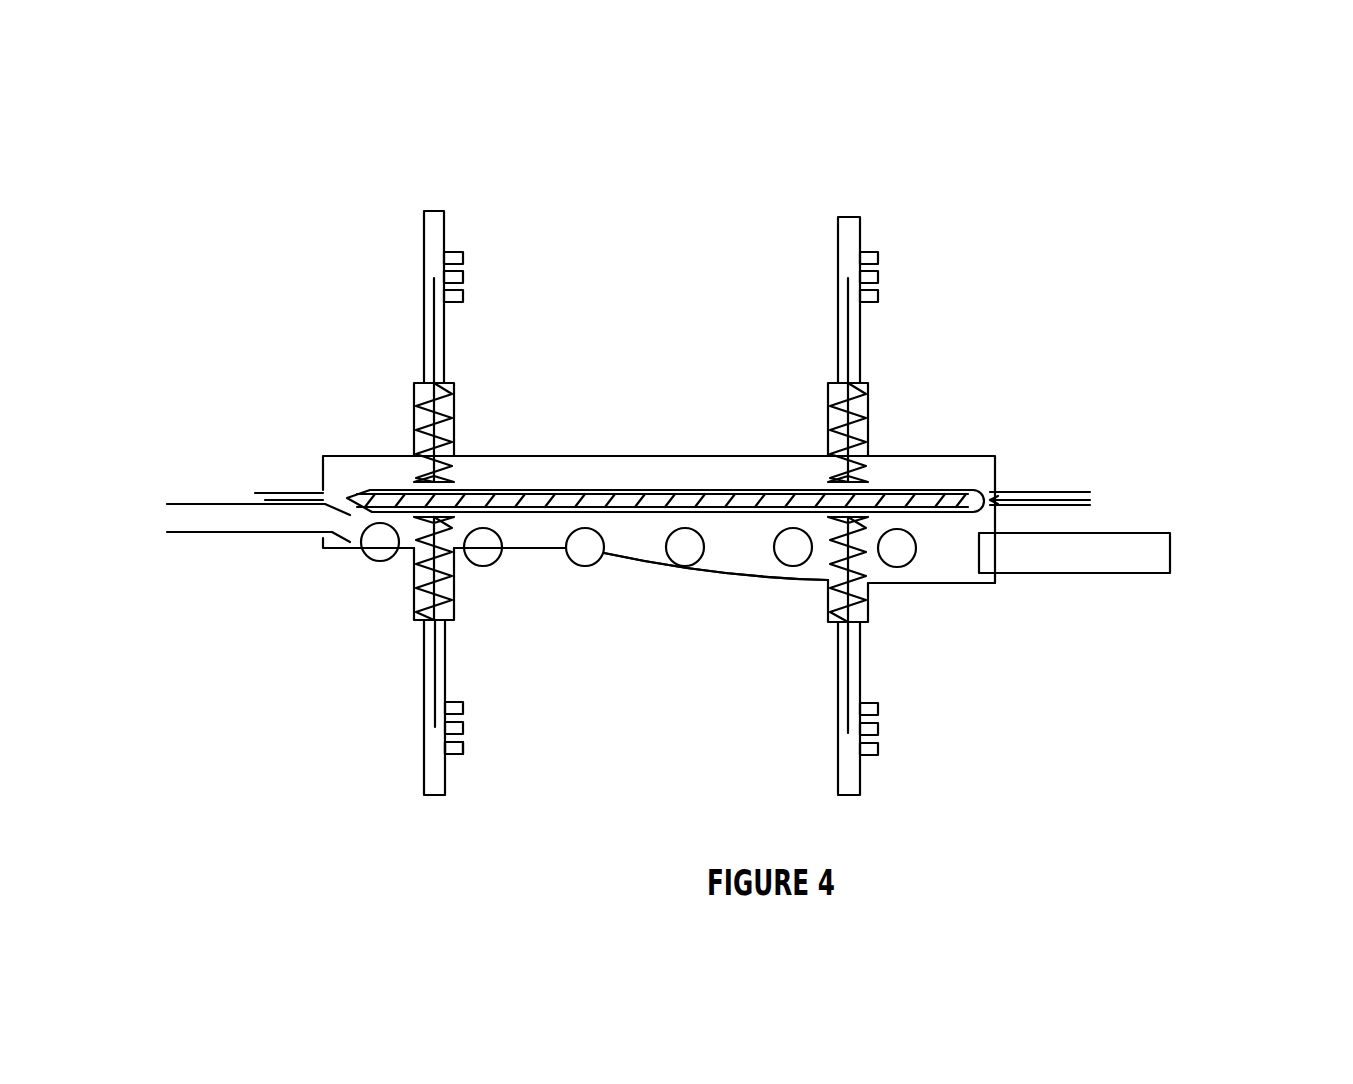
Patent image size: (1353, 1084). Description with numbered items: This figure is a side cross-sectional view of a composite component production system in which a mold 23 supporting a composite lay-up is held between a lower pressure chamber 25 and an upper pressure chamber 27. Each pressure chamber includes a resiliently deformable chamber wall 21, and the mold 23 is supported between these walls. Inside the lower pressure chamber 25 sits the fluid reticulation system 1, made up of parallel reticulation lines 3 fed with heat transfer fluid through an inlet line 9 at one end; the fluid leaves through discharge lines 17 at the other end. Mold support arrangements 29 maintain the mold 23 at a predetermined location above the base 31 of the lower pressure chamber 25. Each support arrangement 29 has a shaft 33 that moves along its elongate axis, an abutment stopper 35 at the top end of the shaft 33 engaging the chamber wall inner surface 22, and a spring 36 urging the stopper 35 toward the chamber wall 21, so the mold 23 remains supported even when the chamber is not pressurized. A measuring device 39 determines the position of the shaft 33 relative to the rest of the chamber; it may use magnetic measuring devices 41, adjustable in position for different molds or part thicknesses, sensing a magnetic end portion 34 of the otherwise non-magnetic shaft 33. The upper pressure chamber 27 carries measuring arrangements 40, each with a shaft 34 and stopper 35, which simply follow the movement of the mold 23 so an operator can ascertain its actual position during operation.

The fluid reticulation system 1 is at (794, 600).
The reticulation lines 3 is at (706, 568).
The inlet line 9 is at (174, 524).
The discharge lines 17 is at (1149, 562).
The resiliently deformable chamber wall 21 is at (368, 490).
The chamber wall inner surface 22 is at (958, 514).
The mold 23 is at (650, 492).
The lower pressure chamber 25 is at (971, 611).
The upper pressure chamber 27 is at (274, 457).
The mold support arrangement 29 is at (411, 700).
The base 31 is at (728, 565).
The shaft 33 is at (425, 717).
The magnetic end portion 34 is at (433, 342).
The abutment stopper 35 is at (457, 482).
The spring 36 is at (443, 568).
The measuring device 39 is at (504, 719).
The measuring arrangements 40 is at (497, 267).
The magnetic measuring devices 41 is at (460, 755).